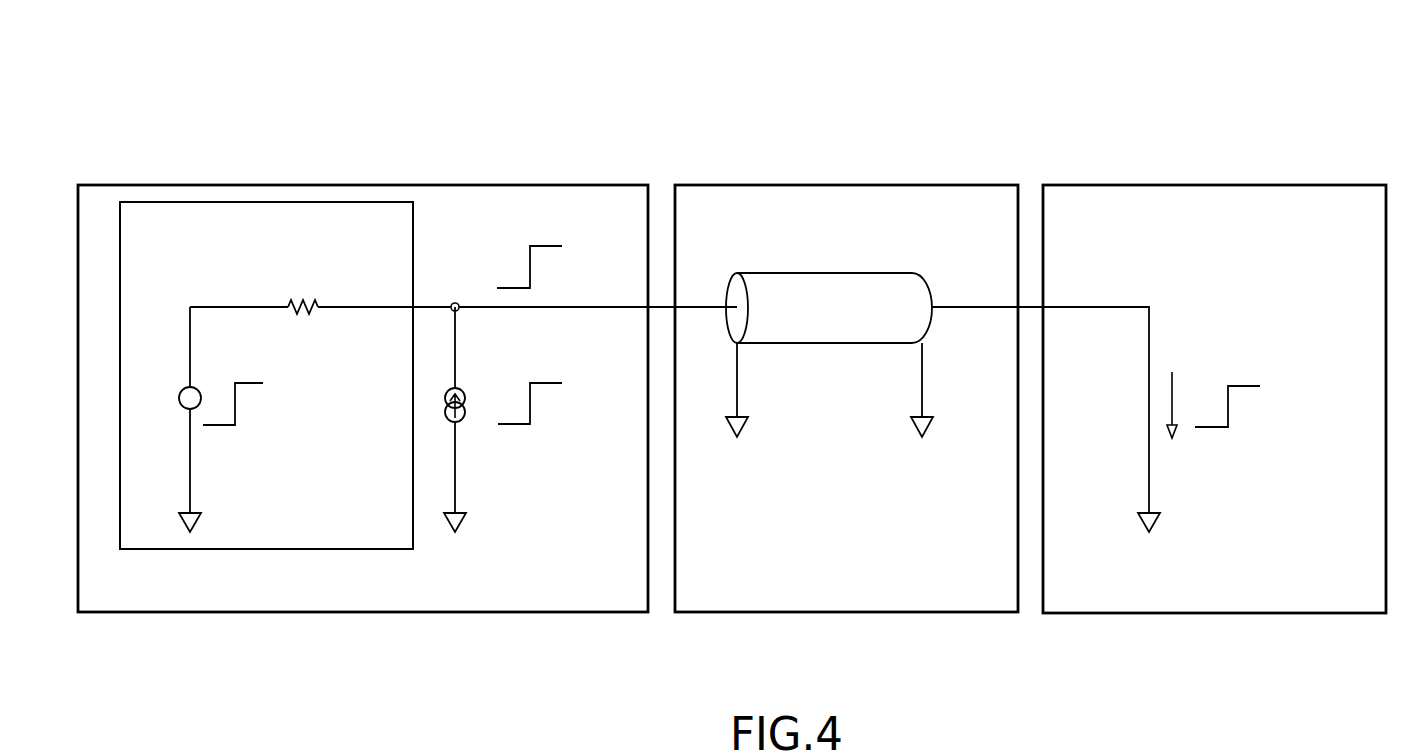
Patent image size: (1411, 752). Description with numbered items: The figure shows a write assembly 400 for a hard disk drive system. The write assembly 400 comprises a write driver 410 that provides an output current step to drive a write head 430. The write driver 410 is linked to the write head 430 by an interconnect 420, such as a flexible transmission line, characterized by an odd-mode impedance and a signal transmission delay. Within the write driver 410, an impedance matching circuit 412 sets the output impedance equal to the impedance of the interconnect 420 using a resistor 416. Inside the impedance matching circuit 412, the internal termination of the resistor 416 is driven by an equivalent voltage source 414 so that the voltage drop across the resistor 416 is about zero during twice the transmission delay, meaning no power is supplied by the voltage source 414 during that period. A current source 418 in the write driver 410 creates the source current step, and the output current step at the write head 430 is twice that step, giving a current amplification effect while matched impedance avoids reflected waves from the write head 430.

The write assembly 400 is at (187, 142).
The write driver 410 is at (344, 185).
The impedance matching circuit 412 is at (267, 202).
The equivalent voltage source 414 is at (180, 405).
The resistor 416 is at (306, 315).
The current source 418 is at (462, 420).
The interconnect 420 is at (799, 185).
The write head 430 is at (1094, 185).